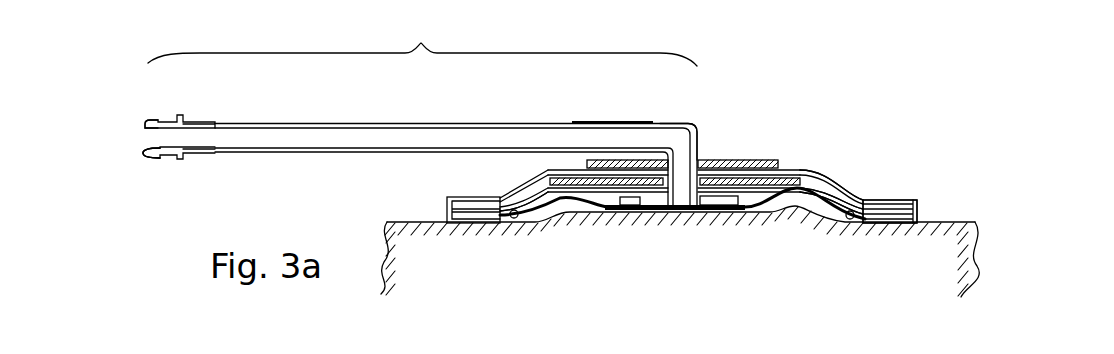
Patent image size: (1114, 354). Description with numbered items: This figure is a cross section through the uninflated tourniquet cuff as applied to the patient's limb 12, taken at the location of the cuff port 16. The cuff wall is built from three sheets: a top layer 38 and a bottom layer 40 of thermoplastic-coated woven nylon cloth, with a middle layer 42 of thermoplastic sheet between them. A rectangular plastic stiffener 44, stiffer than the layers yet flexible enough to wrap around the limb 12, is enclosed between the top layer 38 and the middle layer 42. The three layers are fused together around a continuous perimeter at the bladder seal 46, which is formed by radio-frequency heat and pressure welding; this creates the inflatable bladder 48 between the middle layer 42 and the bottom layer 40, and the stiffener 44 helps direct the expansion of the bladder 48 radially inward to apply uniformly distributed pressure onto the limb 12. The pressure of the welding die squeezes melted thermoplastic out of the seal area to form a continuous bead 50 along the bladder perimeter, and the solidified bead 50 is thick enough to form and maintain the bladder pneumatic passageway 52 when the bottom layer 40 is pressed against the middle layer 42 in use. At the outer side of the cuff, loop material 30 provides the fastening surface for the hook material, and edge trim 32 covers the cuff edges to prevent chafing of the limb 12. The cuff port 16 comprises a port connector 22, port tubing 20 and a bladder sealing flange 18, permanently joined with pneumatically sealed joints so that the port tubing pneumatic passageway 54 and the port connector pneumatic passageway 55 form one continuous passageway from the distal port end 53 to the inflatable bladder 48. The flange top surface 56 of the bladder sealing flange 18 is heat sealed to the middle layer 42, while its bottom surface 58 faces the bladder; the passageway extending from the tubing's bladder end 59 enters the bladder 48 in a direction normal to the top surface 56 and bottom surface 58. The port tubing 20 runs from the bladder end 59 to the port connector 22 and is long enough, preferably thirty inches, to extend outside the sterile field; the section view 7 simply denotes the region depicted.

The catheter device 7 is at (160, 189).
The limb 12 is at (973, 222).
The cuff port 16 is at (422, 43).
The bladder sealing flange 18 is at (698, 122).
The port tubing 20 is at (513, 112).
The port connector 22 is at (172, 118).
The loop material 30 is at (735, 162).
The edge trim 32 is at (920, 200).
The top layer 38 is at (832, 175).
The bottom layer 40 is at (797, 220).
The middle layer 42 is at (845, 186).
The stiffener 44 is at (779, 178).
The bladder seal 46 is at (498, 192).
The inflatable bladder 48 is at (622, 208).
The bead 50 is at (512, 218).
The bladder pneumatic passageway 52 is at (540, 220).
The distal port end 53 is at (132, 150).
The port tubing pneumatic passageway 54 is at (400, 126).
The port connector pneumatic passageway 55 is at (157, 126).
The flange top surface 56 is at (713, 182).
The bottom surface 58 is at (650, 214).
The bladder end 59 is at (660, 124).